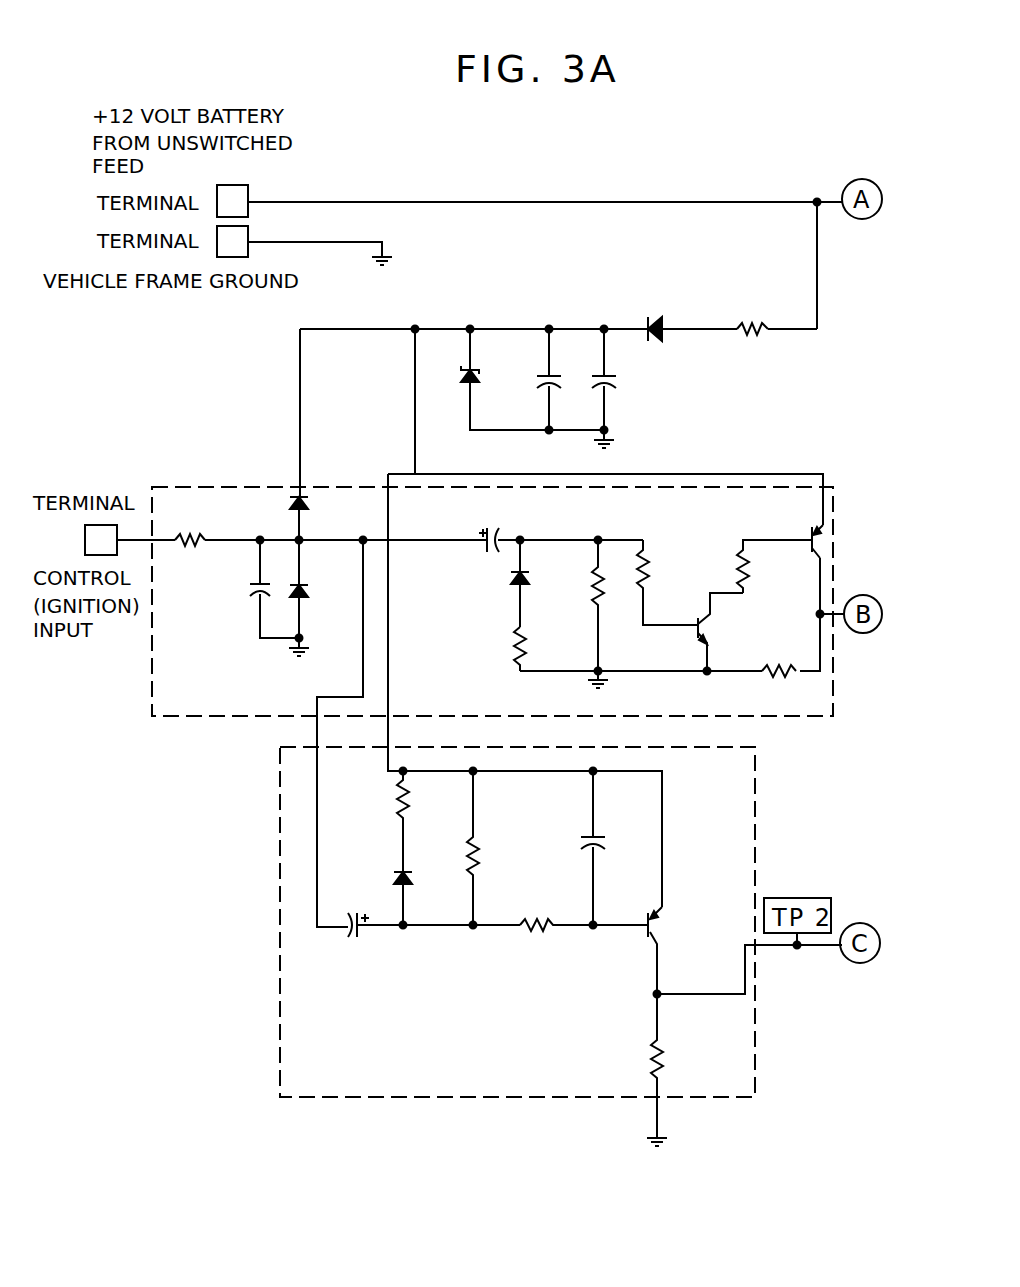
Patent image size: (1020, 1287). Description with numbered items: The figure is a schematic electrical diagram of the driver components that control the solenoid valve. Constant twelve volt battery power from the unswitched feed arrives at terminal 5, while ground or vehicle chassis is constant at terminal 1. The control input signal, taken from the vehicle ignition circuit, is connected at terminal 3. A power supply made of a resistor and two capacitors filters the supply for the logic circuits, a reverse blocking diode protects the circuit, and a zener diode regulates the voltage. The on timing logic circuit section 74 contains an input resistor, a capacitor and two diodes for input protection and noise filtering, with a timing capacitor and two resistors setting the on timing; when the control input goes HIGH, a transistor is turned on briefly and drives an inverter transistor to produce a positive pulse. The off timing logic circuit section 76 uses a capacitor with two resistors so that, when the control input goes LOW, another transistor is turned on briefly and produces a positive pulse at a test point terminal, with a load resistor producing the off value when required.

The "on" timing logic circuit section 74 is at (492, 601).
The "off" timing logic circuit section 76 is at (517, 922).
The terminal # 5 is at (232, 201).
The terminal # 1 is at (232, 241).
The terminal # 3 is at (101, 540).